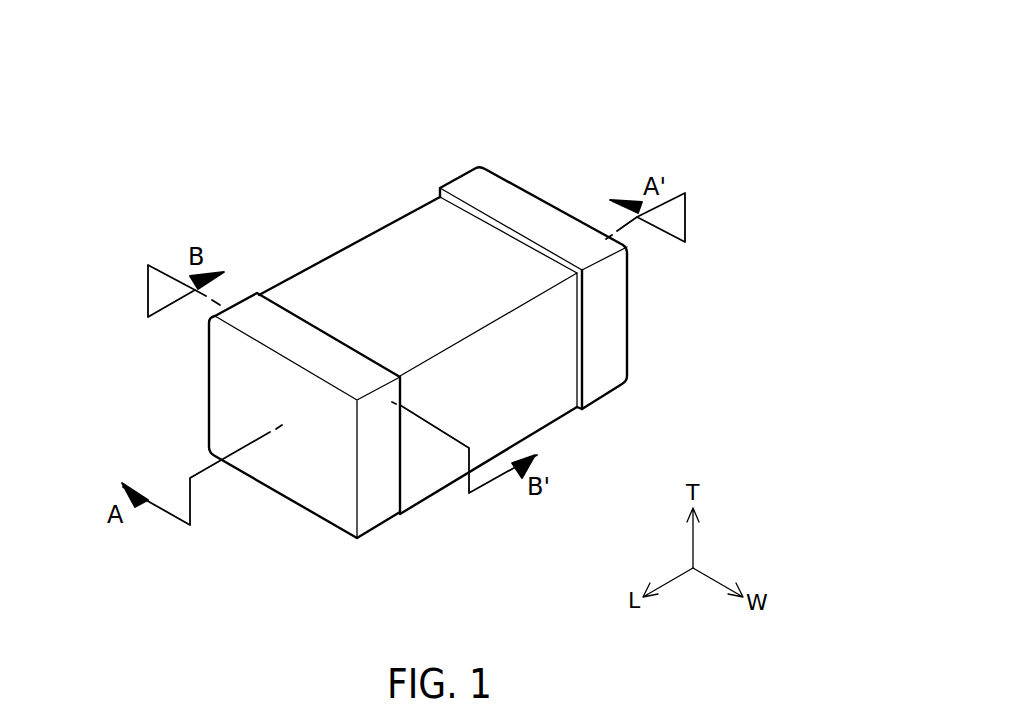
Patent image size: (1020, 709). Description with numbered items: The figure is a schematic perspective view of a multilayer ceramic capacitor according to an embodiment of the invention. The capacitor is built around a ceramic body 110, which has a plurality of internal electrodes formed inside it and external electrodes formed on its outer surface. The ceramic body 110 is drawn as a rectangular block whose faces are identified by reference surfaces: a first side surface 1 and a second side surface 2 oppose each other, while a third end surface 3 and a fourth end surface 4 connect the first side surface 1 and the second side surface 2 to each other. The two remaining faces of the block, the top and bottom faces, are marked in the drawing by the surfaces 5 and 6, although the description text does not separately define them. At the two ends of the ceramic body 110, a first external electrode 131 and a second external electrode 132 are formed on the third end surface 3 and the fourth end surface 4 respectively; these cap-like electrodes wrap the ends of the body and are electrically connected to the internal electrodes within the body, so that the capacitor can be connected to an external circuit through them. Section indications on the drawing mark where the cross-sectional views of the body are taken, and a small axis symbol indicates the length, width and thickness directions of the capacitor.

The first side surface 1 is at (375, 218).
The second side surface 2 is at (528, 385).
The third end surface 3 is at (305, 478).
The fourth end surface 4 is at (547, 187).
The fifth surface of body 5 is at (440, 252).
The sixth surface of body 6 is at (432, 488).
The ceramic body 110 is at (427, 227).
The first external electrode 131 is at (310, 469).
The second external electrode 132 is at (601, 235).